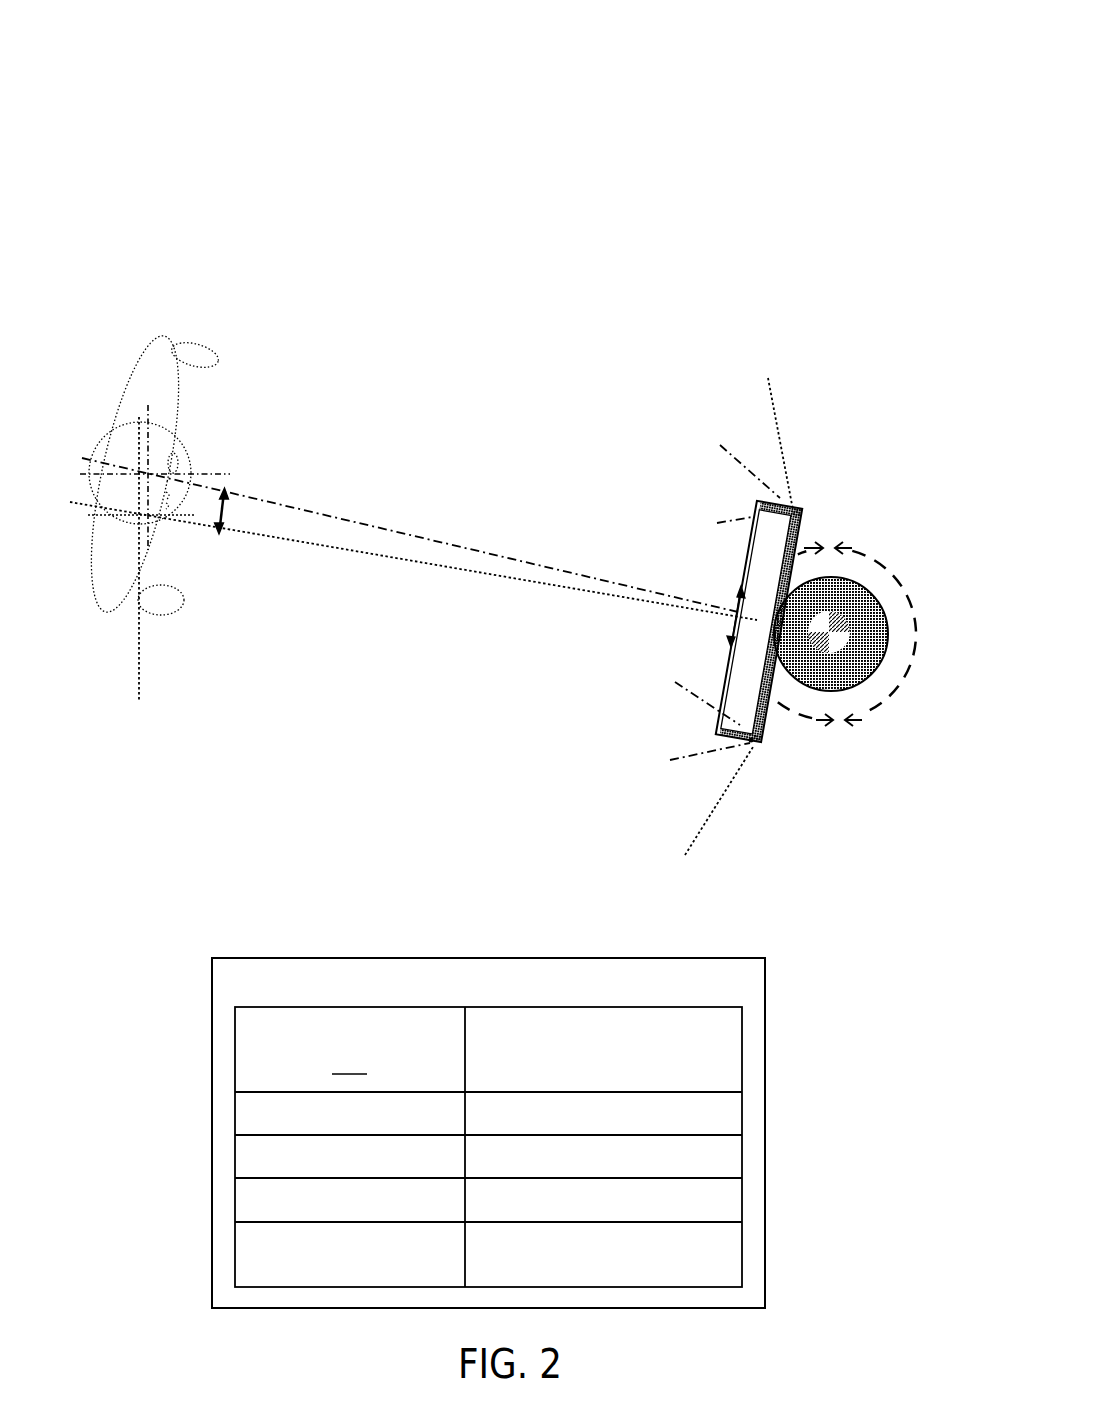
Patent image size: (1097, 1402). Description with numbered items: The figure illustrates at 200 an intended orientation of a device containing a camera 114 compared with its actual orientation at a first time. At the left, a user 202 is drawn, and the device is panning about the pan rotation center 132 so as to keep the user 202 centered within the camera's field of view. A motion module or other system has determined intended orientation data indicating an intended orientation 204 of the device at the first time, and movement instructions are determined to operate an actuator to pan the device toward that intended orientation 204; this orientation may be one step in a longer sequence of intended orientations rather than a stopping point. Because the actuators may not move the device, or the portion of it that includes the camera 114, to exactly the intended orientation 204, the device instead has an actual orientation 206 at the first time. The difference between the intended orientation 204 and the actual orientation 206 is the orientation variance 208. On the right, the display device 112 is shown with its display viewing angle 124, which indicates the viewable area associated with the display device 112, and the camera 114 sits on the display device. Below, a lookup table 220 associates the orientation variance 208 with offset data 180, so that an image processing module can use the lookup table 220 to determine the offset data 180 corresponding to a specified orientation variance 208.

The illustration of intended orientation compared to actual orientation 200 is at (886, 26).
The user 202 is at (159, 457).
The intended orientation 204 is at (410, 527).
The actual orientation 206 is at (413, 591).
The orientation variance 208 is at (387, 590).
The display viewing angle 124 is at (760, 584).
The display device 112 is at (692, 602).
The camera 114 is at (661, 778).
The pan rotation center 132 is at (754, 742).
The lookup table 220 is at (570, 992).
The offset data 180 is at (712, 1061).